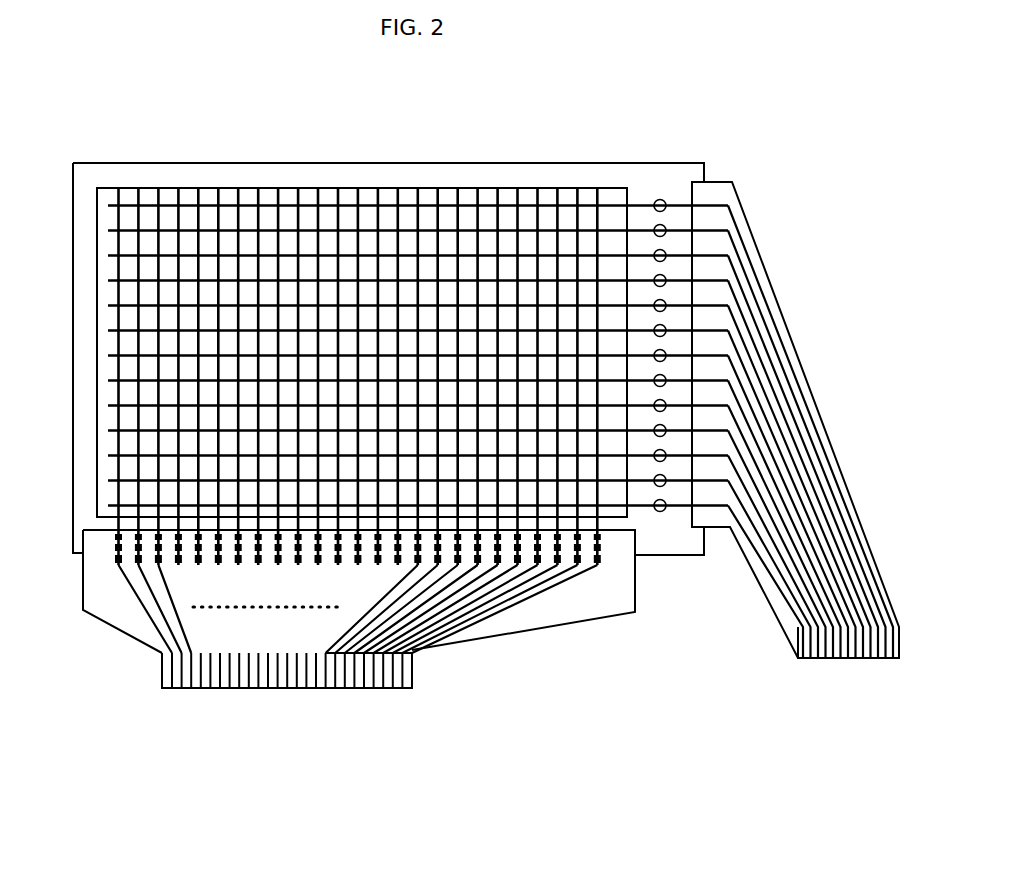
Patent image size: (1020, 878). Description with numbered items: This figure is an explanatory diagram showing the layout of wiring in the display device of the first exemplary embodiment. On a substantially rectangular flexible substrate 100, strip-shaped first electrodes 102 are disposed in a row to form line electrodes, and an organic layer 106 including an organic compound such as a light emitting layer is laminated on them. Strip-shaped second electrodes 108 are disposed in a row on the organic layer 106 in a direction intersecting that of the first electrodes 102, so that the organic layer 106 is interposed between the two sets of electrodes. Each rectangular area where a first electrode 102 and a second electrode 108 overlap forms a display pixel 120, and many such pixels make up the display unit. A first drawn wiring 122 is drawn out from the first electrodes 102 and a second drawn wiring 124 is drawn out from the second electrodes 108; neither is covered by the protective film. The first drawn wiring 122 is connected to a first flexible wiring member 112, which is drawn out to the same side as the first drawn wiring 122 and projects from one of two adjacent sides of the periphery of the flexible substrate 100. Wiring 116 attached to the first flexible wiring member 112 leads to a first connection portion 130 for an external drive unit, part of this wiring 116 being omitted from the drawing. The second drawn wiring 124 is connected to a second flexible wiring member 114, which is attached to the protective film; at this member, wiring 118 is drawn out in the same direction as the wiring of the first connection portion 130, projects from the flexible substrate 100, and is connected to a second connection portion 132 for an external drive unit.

The flexible substrate 100 is at (180, 172).
The first electrode 102 is at (306, 222).
The organic layer 106 is at (107, 263).
The second electrode 108 is at (468, 228).
The first flexible wiring member 112 is at (110, 592).
The second flexible wiring member 114 is at (762, 530).
The wiring 116 is at (500, 612).
The wiring 118 is at (797, 427).
The display pixel 120 is at (383, 228).
The first drawn wiring 122 is at (635, 525).
The second drawn wiring 124 is at (676, 228).
The first connection portion 130 is at (197, 689).
The second connection portion 132 is at (852, 645).